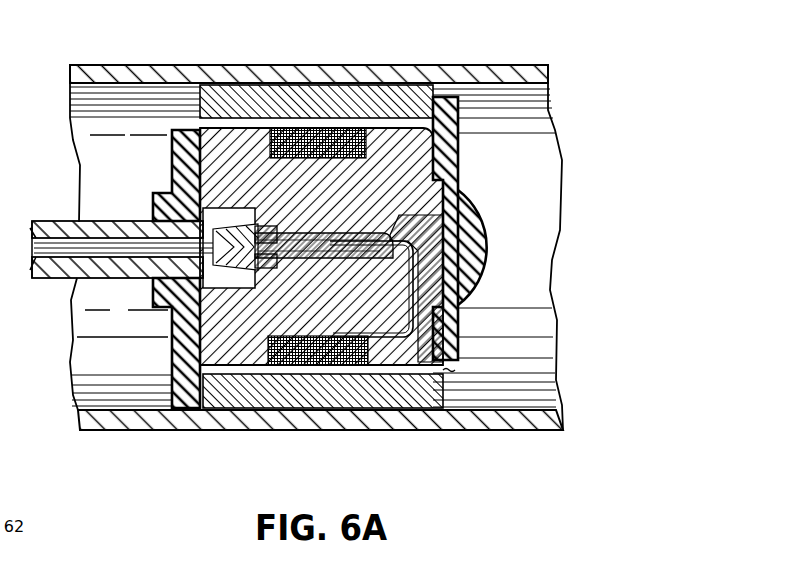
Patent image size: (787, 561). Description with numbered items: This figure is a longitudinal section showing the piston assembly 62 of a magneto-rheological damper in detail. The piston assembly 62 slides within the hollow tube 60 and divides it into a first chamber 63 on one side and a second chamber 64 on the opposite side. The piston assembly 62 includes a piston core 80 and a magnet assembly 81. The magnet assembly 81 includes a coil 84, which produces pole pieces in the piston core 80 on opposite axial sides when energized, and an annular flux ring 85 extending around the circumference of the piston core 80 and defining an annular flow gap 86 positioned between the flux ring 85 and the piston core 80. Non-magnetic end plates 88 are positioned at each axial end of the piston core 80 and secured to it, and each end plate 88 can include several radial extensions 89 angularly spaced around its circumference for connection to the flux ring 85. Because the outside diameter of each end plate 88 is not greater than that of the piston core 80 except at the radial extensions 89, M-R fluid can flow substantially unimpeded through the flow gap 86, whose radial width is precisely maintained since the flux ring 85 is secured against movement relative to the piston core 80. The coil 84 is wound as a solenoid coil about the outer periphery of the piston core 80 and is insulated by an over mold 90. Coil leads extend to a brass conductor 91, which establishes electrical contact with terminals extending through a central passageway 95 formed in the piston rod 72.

The hollow tube 60 is at (90, 427).
The piston assembly 62 is at (235, 376).
The first chamber 63 is at (510, 197).
The second chamber 64 is at (116, 171).
The piston rod 72 is at (53, 278).
The piston core 80 is at (228, 366).
The magnet assembly 81 is at (283, 125).
The coil 84 is at (328, 366).
The annular flux ring 85 is at (392, 394).
The annular flow gap 86 is at (448, 374).
The non-magnetic end plate 88 is at (460, 153).
The radial extension 89 is at (446, 100).
The over mold 90 is at (346, 127).
The brass conductor 91 is at (287, 258).
The central passageway 95 is at (45, 221).